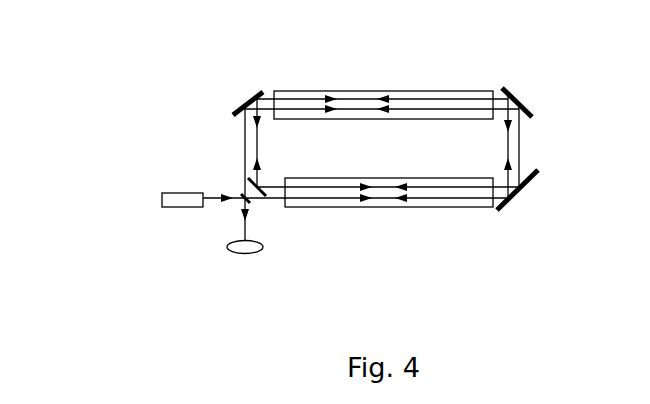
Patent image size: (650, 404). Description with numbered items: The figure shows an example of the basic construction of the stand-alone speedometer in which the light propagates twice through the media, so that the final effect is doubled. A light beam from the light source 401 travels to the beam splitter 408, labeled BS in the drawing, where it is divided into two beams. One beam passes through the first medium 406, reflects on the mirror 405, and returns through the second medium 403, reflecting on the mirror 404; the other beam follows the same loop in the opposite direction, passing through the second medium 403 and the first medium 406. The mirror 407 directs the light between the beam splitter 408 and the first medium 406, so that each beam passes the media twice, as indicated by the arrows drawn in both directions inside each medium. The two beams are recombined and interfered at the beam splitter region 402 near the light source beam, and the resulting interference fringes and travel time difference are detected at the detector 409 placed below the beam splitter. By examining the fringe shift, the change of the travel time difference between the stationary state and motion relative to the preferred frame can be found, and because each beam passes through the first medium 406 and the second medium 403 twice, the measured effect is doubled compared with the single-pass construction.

The light source 401 is at (166, 192).
The beam splitter 402 is at (243, 203).
The second medium 403 is at (445, 208).
The mirror 404 is at (538, 170).
The mirror 405 is at (507, 88).
The first medium 406 is at (314, 93).
The mirror 407 is at (250, 94).
The beam splitter 408 is at (252, 182).
The detector 409 is at (250, 253).